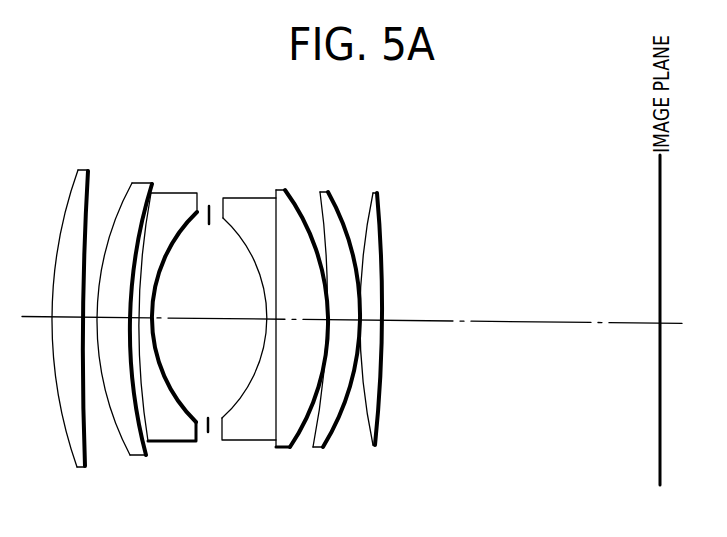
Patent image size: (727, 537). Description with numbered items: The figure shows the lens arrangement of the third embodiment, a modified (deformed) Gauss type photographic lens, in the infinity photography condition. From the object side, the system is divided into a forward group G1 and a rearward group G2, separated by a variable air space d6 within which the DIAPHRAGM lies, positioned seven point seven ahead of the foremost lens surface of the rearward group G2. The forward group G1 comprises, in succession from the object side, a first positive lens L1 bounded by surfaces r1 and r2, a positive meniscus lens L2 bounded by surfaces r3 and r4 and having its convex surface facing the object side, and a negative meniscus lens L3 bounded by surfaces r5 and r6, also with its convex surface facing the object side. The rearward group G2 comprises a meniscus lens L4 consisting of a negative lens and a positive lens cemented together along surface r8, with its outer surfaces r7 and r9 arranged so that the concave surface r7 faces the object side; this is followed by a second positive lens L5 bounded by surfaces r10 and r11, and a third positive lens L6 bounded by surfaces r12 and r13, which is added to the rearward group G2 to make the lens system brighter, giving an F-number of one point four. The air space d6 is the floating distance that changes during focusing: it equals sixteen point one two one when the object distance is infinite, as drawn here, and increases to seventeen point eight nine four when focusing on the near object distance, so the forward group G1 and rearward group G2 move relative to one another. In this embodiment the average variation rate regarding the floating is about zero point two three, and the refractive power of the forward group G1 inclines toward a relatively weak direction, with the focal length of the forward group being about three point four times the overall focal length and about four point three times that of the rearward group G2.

The forward group G1 is at (202, 134).
The rearward group G2 is at (395, 134).
The first positive lens L1 is at (88, 170).
The positive meniscus lens L2 is at (145, 182).
The negative meniscus lens L3 is at (182, 192).
The meniscus lens L4 is at (288, 185).
The second positive lens L5 is at (323, 191).
The third positive lens L6 is at (373, 192).
The first lens surface r1 is at (72, 467).
The second lens surface r2 is at (90, 467).
The third lens surface r3 is at (128, 455).
The fourth lens surface r4 is at (146, 455).
The fifth lens surface r5 is at (166, 442).
The sixth lens surface r6 is at (190, 443).
The seventh lens surface r7 is at (230, 441).
The eighth lens surface r8 is at (264, 441).
The ninth lens surface r9 is at (286, 448).
The tenth lens surface r10 is at (314, 448).
The eleventh lens surface r11 is at (327, 448).
The twelfth lens surface r12 is at (364, 446).
The thirteenth lens surface r13 is at (378, 446).
The variable air space d6 is at (211, 302).
The diaphragm DIAPHRAGM is at (212, 267).